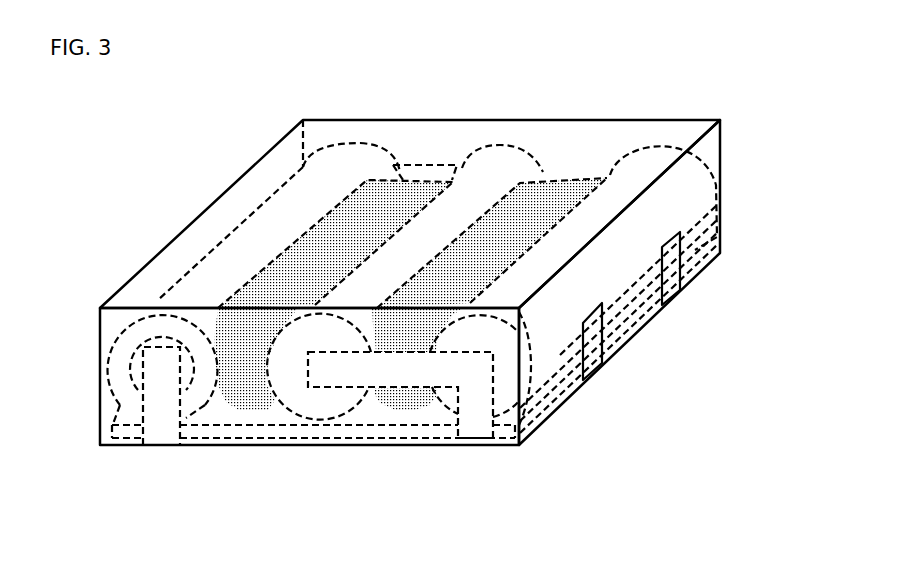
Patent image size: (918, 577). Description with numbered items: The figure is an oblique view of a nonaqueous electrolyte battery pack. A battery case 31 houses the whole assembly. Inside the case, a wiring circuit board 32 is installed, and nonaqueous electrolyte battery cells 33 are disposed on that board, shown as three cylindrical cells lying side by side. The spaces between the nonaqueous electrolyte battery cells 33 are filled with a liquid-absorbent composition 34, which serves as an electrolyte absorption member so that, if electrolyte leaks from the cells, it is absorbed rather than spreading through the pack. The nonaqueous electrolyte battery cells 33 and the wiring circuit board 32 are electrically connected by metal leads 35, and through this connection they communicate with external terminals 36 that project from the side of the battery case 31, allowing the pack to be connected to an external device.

The battery case 31 is at (722, 143).
The wiring circuit board 32 is at (207, 430).
The nonaqueous electrolyte battery cells 33 is at (650, 152).
The liquid-absorbent composition 34 is at (398, 200).
The metal leads 35 is at (333, 373).
The external terminals 36 is at (593, 363).